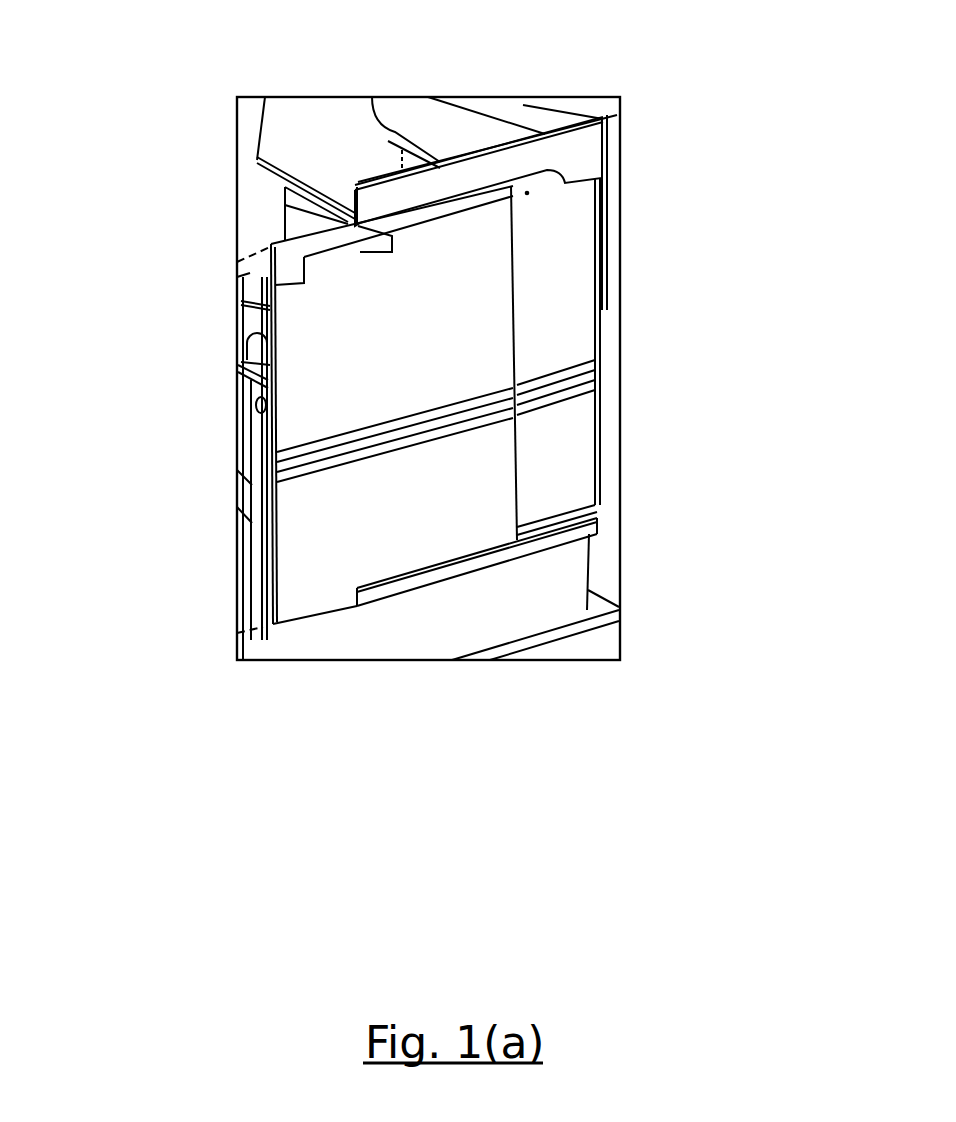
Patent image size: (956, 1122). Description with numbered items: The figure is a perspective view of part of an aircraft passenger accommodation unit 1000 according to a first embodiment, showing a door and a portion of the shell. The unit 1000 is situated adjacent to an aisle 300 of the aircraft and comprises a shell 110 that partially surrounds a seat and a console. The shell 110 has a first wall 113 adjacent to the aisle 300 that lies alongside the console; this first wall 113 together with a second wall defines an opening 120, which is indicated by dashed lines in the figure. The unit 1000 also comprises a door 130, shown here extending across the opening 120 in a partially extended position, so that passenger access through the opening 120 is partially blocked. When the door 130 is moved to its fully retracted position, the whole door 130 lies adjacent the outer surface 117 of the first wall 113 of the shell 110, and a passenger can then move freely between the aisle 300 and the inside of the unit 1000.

The aircraft passenger accommodation unit 1000 is at (222, 176).
The shell 110 is at (527, 104).
The door 130 is at (478, 361).
The outer surface 117 is at (563, 443).
The first wall 113 is at (579, 563).
The aisle 300 is at (619, 633).
The opening 120 is at (245, 390).